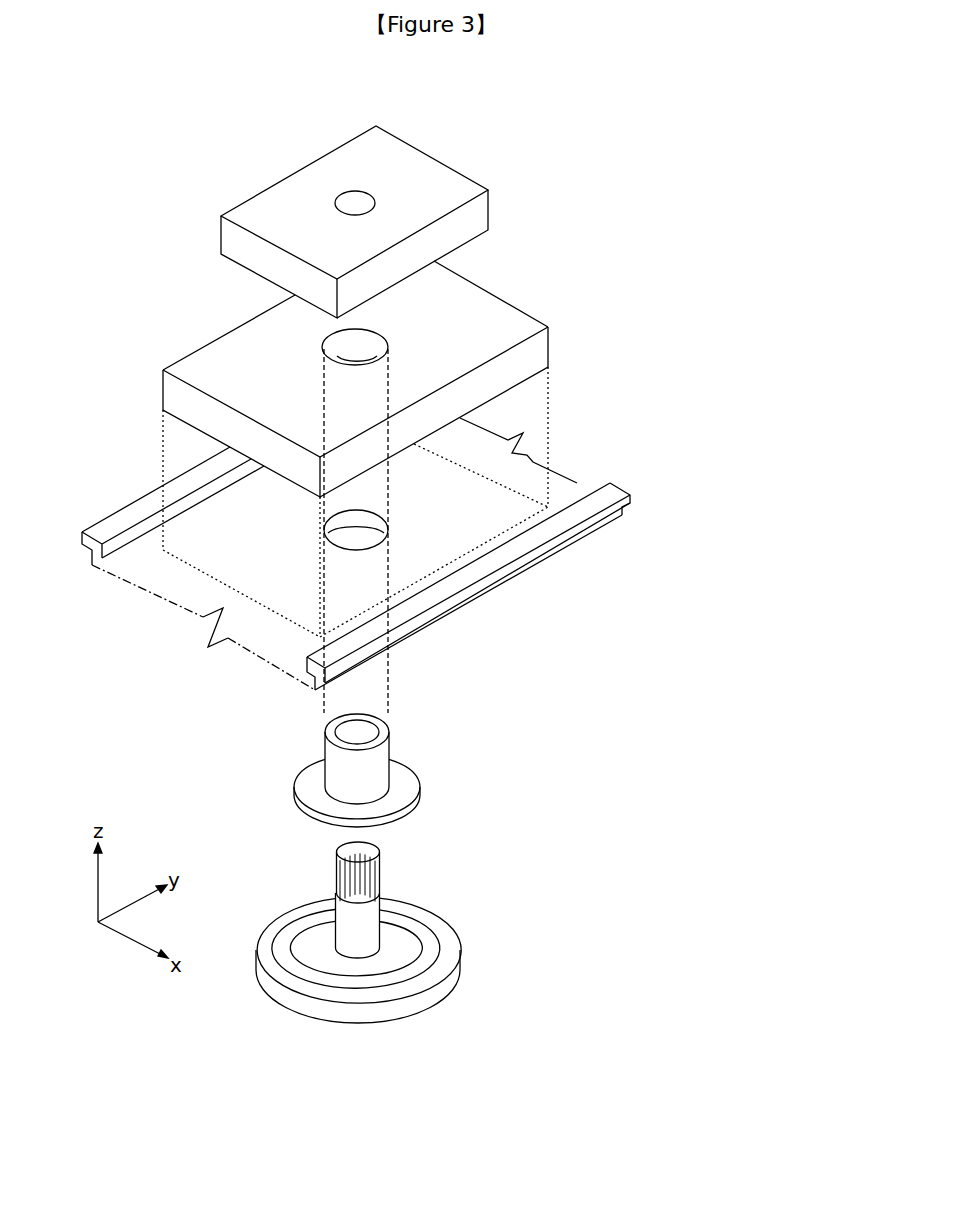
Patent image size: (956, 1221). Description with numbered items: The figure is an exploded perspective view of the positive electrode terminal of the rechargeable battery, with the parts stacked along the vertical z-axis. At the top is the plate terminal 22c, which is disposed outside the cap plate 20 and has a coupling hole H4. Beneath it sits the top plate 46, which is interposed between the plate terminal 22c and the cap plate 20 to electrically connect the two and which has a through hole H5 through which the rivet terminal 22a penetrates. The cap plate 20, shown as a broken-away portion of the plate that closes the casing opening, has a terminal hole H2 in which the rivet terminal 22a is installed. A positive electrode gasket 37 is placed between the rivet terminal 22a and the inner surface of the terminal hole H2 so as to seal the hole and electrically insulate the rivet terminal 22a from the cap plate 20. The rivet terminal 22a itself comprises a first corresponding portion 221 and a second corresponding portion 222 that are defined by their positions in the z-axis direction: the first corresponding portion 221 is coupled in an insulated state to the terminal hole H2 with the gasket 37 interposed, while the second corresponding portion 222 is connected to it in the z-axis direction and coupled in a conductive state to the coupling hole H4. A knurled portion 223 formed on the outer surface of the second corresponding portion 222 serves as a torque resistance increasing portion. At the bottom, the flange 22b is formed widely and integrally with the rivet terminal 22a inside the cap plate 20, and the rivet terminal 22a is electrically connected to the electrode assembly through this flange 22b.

The plate terminal 22c is at (490, 200).
The coupling hole H4 is at (343, 197).
The top plate 46 is at (548, 338).
The through hole H5 is at (370, 346).
The cap plate 20 is at (585, 485).
The terminal hole H2 is at (375, 518).
The positive electrode gasket 37 is at (417, 762).
The rivet terminal 22a is at (415, 890).
The second corresponding portion 222 is at (386, 855).
The knurled portion 223 is at (335, 866).
The first corresponding portion 221 is at (387, 914).
The flange 22b is at (447, 980).